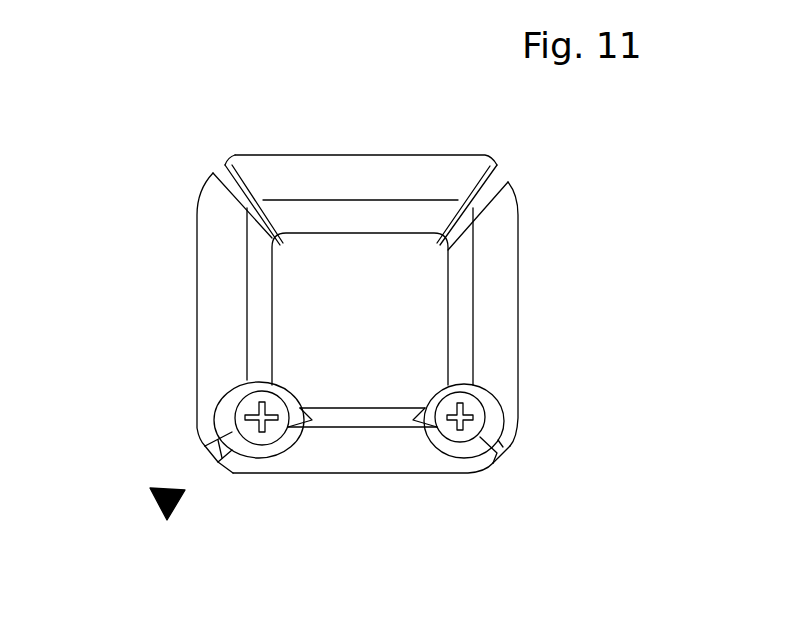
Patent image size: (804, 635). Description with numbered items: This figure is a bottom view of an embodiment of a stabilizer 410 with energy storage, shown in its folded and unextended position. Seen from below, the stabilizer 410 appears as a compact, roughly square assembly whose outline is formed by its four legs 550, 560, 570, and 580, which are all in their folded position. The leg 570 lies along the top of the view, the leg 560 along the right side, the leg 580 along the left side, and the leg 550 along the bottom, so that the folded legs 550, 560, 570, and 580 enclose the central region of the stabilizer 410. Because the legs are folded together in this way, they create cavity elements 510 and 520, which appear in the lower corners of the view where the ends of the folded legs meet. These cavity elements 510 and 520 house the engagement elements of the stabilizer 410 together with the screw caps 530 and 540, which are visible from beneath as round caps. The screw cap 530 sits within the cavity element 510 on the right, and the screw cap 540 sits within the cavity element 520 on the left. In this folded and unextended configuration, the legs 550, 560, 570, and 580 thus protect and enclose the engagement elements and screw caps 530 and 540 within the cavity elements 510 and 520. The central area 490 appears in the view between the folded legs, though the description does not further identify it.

The stabilizer 410 is at (160, 502).
The inner plate 490 is at (312, 282).
The cavity element 510 is at (498, 430).
The cavity element 520 is at (230, 432).
The screw cap 530 is at (480, 405).
The screw cap 540 is at (252, 405).
The leg 550 is at (370, 462).
The leg 560 is at (500, 288).
The leg 570 is at (352, 185).
The leg 580 is at (220, 288).